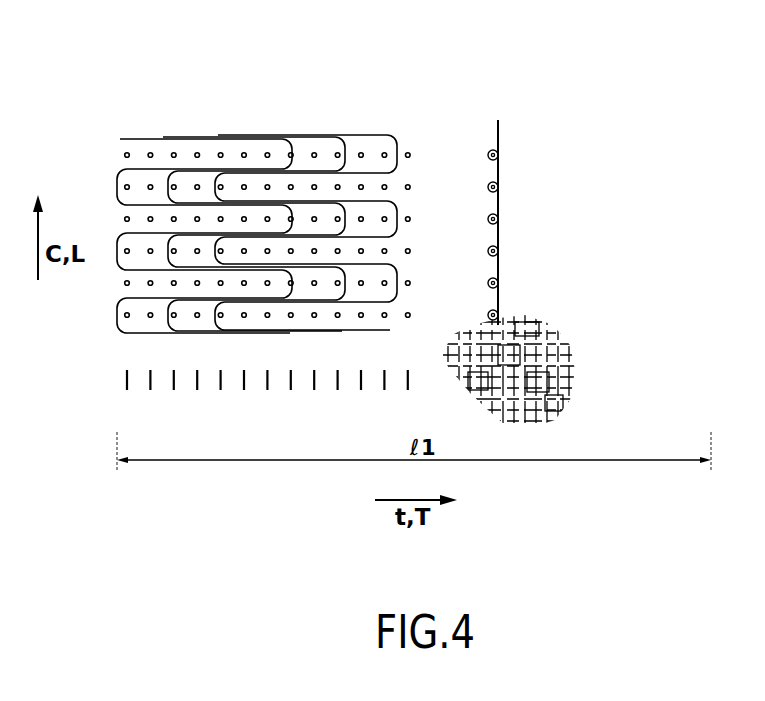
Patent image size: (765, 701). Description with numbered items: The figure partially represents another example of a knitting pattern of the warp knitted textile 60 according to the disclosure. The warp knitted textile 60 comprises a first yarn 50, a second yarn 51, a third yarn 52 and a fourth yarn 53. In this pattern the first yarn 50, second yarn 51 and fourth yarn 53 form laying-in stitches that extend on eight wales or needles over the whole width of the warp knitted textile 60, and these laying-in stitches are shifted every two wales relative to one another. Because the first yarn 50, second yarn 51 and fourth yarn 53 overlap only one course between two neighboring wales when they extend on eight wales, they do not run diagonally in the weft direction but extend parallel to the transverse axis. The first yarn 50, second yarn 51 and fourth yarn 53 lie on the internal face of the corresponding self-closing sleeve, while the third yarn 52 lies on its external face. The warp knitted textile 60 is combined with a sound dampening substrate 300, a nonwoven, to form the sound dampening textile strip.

The first yarn 50 is at (137, 132).
The second yarn 51 is at (178, 130).
The fourth yarn 53 is at (237, 128).
The third yarn 52 is at (497, 105).
The warp knitted textile 60 is at (409, 82).
The sound dampening substrate 300 is at (548, 356).